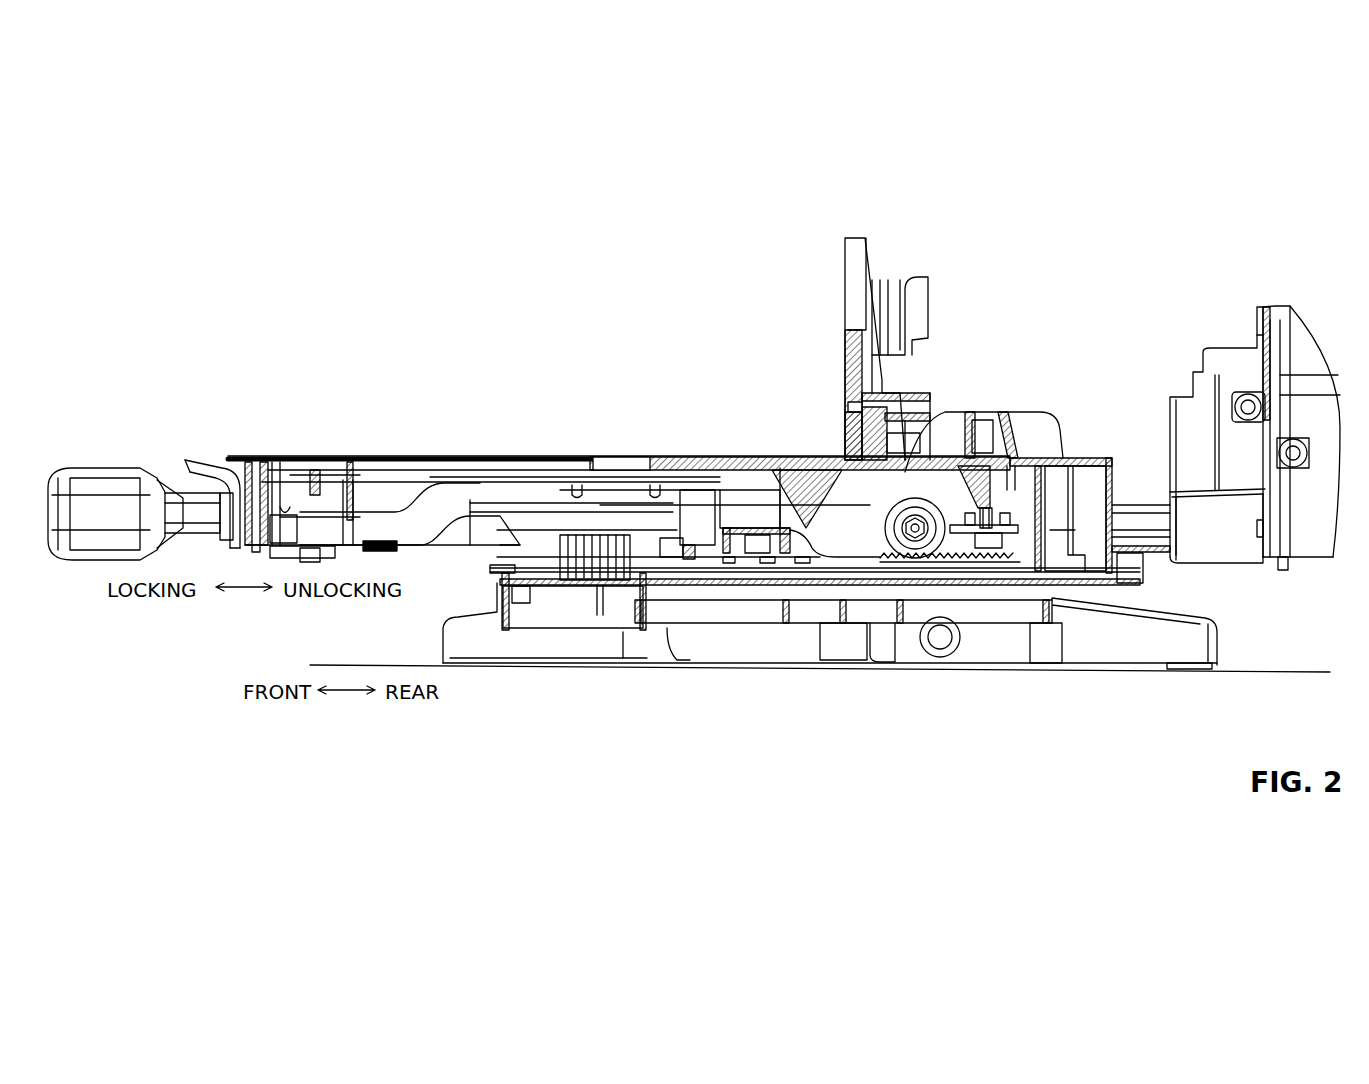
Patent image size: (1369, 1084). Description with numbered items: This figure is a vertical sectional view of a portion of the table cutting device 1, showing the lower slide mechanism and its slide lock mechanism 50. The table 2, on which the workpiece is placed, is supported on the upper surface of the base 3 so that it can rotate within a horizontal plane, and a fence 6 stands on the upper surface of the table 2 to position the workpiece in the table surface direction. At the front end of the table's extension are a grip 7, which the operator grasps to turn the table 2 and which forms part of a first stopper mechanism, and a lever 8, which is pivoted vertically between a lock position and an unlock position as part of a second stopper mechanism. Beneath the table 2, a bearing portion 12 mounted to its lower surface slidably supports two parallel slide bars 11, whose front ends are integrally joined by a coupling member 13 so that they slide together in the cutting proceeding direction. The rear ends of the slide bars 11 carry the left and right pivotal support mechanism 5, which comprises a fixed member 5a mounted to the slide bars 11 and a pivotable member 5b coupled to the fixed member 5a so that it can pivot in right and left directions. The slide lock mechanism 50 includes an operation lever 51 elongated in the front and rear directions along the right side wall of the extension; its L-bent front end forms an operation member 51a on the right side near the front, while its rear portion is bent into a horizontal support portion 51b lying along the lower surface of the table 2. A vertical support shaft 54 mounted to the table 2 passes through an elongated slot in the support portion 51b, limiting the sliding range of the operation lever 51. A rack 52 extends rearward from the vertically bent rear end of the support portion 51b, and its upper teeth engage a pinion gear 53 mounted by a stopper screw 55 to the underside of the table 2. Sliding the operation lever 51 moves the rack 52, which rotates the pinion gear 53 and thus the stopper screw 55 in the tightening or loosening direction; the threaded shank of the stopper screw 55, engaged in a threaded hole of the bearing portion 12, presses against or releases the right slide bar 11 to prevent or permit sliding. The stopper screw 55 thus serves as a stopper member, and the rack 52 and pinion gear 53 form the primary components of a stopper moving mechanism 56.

The table cutting device 1 is at (986, 290).
The table 2 is at (750, 460).
The base 3 is at (470, 652).
The left and right pivotal support mechanism 5 is at (1238, 335).
The fixed member 5a is at (1222, 547).
The pivotable member 5b is at (1305, 357).
The fence 6 is at (857, 262).
The grip 7 is at (107, 490).
The lever 8 is at (213, 462).
The slide bars 11 is at (705, 517).
The bearing portion 12 is at (950, 500).
The coupling member 13 is at (690, 603).
The slide lock mechanism 50 is at (825, 411).
The operation lever 51 is at (438, 490).
The operation member 51a is at (293, 470).
The support portion 51b is at (622, 490).
The rack 52 is at (962, 566).
The pinion gear 53 is at (866, 562).
The support shaft 54 is at (662, 625).
The stopper screw 55 is at (930, 572).
The stopper moving mechanism 56 is at (858, 522).